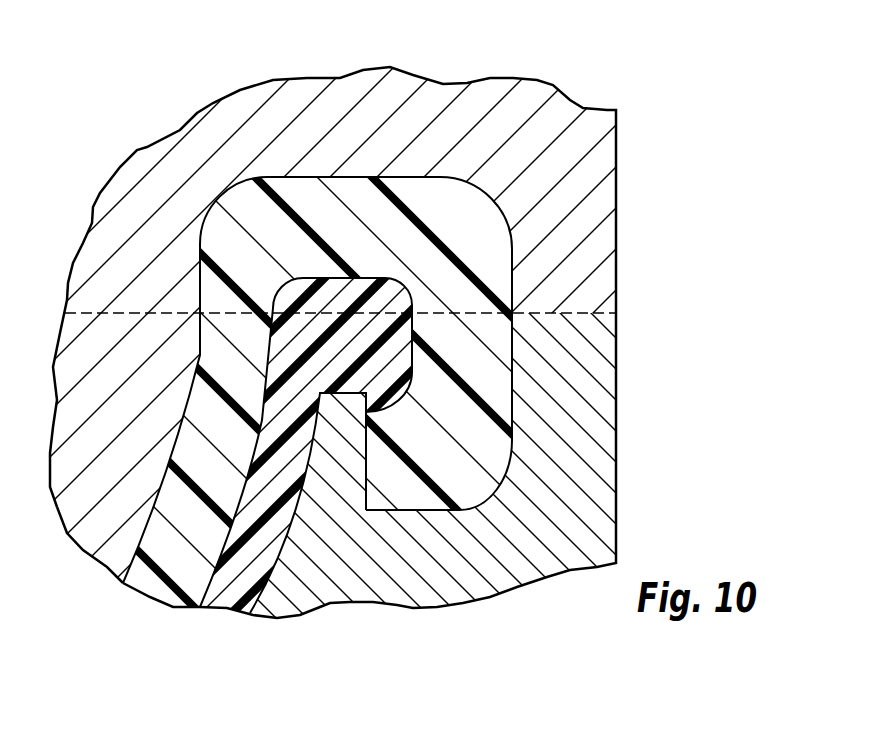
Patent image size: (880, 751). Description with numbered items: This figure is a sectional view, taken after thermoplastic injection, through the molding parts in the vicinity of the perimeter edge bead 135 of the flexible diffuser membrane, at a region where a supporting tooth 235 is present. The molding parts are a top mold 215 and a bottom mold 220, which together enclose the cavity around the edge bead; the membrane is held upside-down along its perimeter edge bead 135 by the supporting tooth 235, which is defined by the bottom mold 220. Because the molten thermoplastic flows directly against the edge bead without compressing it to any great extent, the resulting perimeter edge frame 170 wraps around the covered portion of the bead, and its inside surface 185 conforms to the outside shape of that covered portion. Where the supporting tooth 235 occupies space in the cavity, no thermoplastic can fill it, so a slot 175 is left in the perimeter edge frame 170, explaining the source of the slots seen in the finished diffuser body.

The perimeter edge bead 135 is at (347, 297).
The inside surface 185 is at (396, 280).
The top mold 215 is at (630, 157).
The bottom mold 220 is at (632, 490).
The perimeter edge frame 170 is at (514, 415).
The slot 175 is at (373, 462).
The supporting tooth 235 is at (337, 452).